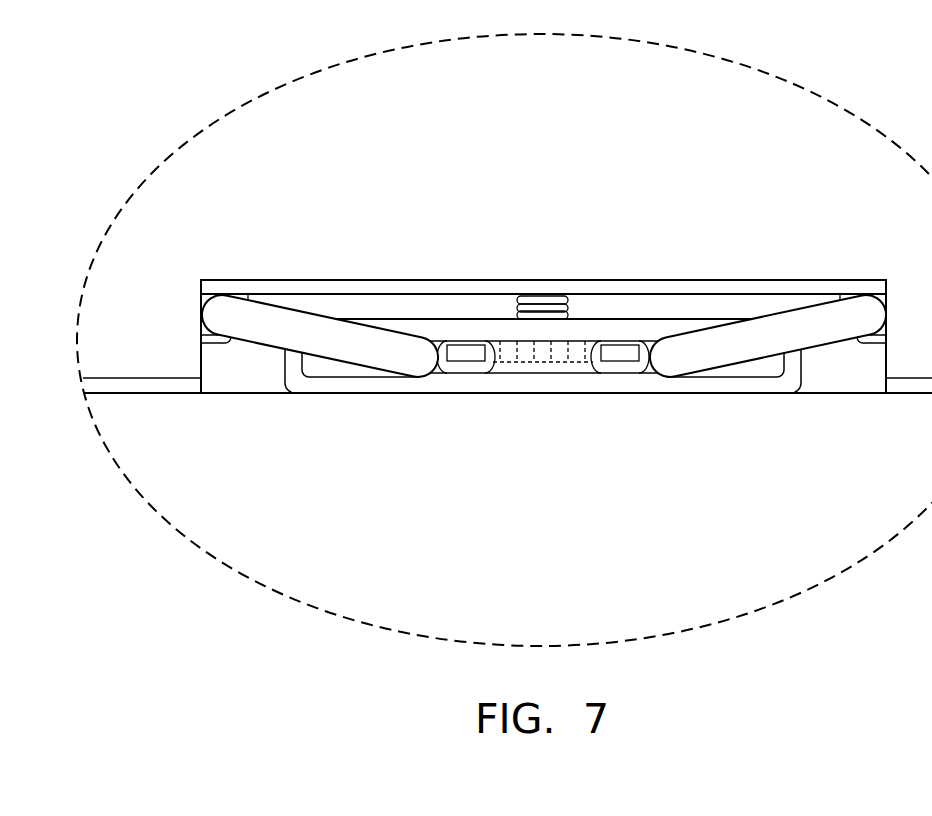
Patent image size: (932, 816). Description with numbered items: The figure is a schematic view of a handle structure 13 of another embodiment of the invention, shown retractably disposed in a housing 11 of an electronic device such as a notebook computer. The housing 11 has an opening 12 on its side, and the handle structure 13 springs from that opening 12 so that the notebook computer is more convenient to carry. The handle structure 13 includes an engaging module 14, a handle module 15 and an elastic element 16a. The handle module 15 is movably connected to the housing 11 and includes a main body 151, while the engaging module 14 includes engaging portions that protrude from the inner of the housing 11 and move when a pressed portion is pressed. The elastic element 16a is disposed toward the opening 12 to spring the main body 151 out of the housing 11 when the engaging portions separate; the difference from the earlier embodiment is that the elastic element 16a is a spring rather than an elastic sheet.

The housing 11 is at (820, 157).
The opening 12 is at (242, 395).
The handle structure 13 is at (544, 406).
The engaging module 14 is at (542, 365).
The handle module 15 is at (544, 400).
The main body 151 is at (418, 378).
The elastic element 16a is at (541, 297).